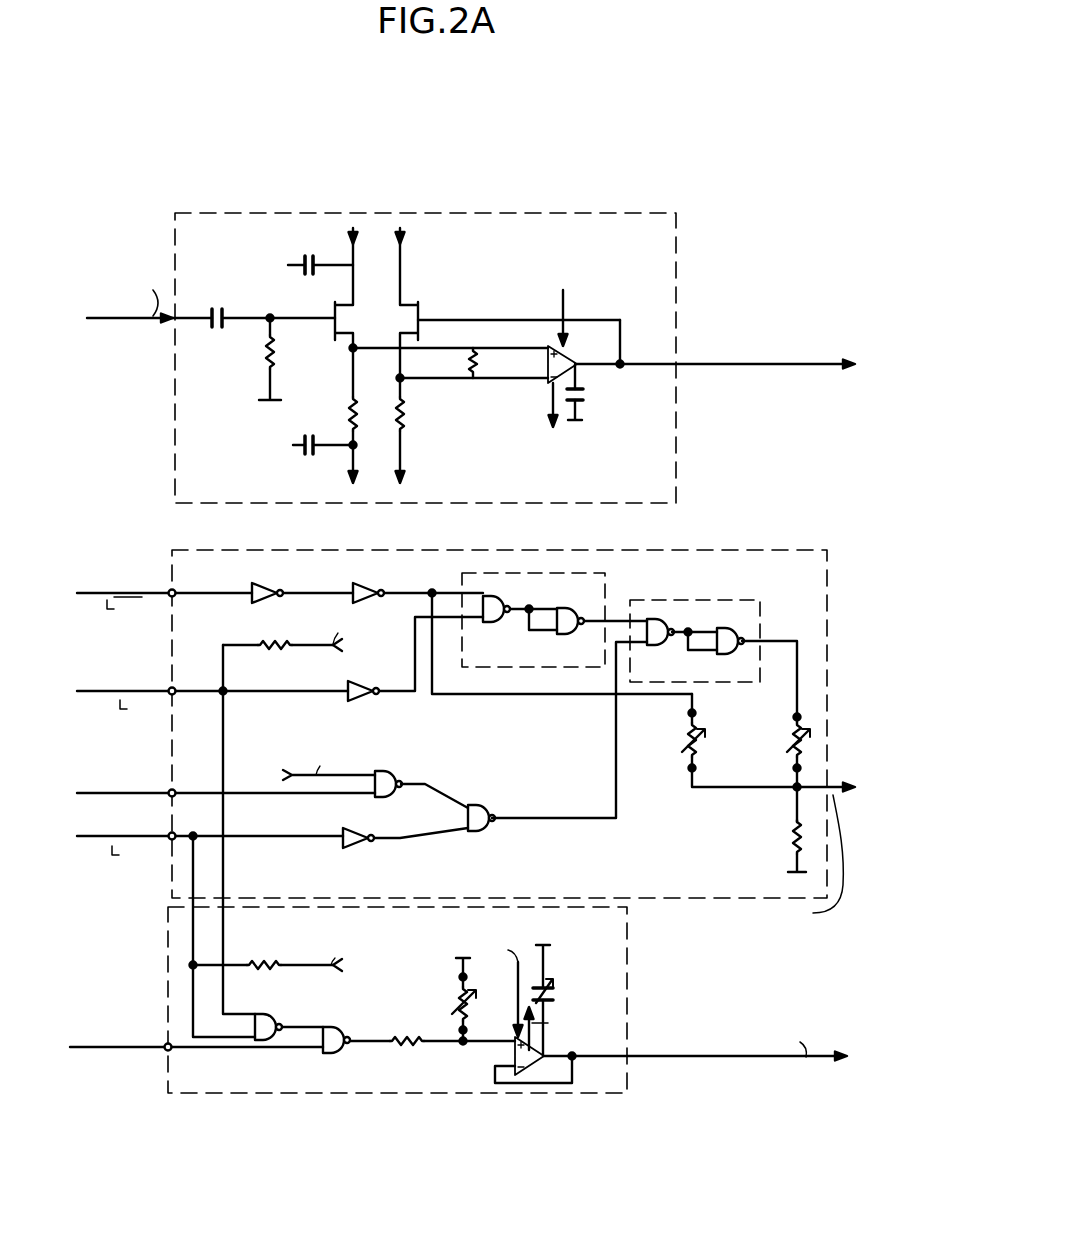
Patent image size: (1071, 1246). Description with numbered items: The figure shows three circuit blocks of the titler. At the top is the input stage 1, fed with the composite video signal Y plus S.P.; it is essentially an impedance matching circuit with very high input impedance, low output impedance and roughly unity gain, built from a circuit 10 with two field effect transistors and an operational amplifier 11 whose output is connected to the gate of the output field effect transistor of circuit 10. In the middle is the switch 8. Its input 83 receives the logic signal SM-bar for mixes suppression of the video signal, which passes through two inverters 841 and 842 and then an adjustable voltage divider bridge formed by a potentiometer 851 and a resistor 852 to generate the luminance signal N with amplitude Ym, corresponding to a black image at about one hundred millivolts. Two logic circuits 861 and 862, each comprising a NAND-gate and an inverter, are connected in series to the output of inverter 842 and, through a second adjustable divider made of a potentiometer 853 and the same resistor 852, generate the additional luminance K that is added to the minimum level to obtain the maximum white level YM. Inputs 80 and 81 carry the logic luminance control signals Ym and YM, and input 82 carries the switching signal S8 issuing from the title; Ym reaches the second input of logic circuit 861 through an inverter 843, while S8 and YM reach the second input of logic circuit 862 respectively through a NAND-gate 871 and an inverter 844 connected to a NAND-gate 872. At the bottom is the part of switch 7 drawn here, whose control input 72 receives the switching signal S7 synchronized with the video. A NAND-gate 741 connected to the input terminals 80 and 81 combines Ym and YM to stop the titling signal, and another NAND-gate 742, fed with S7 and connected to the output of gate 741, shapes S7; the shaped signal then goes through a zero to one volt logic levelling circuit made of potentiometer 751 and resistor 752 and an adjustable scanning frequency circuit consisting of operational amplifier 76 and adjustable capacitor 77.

The input stage 1 is at (437, 213).
The circuit with two field effect transistors 10 is at (369, 317).
The operational amplifier 11 is at (572, 358).
The switch 8 is at (738, 552).
The input 83 is at (170, 590).
The input 80 is at (170, 690).
The input 82 is at (170, 791).
The input 81 is at (169, 834).
The inverter 841 is at (272, 578).
The inverter 842 is at (364, 587).
The inverter 843 is at (359, 687).
The inverter 844 is at (352, 845).
The logic circuit 861 is at (603, 590).
The logic circuit 862 is at (753, 603).
The NAND-gate 871 is at (388, 775).
The NAND-gate 872 is at (482, 813).
The potentiometer 851 is at (684, 745).
The potentiometer 853 is at (789, 745).
The resistor 852 is at (790, 835).
The switch 7 is at (627, 956).
The control input 72 is at (166, 1045).
The NAND-gate 741 is at (265, 1024).
The NAND-gate 742 is at (328, 1028).
The resistor 752 is at (400, 1038).
The potentiometer 751 is at (458, 995).
The operational amplifier 76 is at (515, 1057).
The adjustable capacitor 77 is at (553, 995).